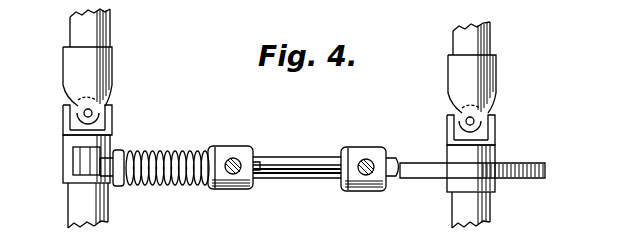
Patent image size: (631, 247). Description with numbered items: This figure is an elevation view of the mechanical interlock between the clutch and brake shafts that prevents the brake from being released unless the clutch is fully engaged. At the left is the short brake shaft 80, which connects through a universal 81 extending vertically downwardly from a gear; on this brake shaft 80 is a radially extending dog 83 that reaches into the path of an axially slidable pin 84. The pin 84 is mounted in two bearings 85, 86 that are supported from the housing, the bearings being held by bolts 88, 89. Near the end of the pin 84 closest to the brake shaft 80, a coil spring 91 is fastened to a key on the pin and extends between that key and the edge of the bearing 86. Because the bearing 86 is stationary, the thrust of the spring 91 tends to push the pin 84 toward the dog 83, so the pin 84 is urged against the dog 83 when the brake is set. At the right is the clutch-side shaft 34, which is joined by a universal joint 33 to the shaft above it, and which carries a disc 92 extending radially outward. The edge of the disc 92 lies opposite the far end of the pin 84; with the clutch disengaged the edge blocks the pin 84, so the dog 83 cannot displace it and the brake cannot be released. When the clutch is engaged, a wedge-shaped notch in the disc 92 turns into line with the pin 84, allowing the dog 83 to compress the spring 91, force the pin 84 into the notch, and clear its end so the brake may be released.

The universal joint 33 is at (497, 87).
The shaft 34 is at (490, 218).
The brake shaft 80 is at (80, 207).
The universal 81 is at (113, 73).
The dog 83 is at (100, 163).
The pin 84 is at (303, 157).
The bearing 85 is at (352, 148).
The bearing 86 is at (221, 146).
The bolt 88 is at (238, 158).
The bolt 89 is at (367, 178).
The coil spring 91 is at (155, 148).
The disc 92 is at (520, 163).